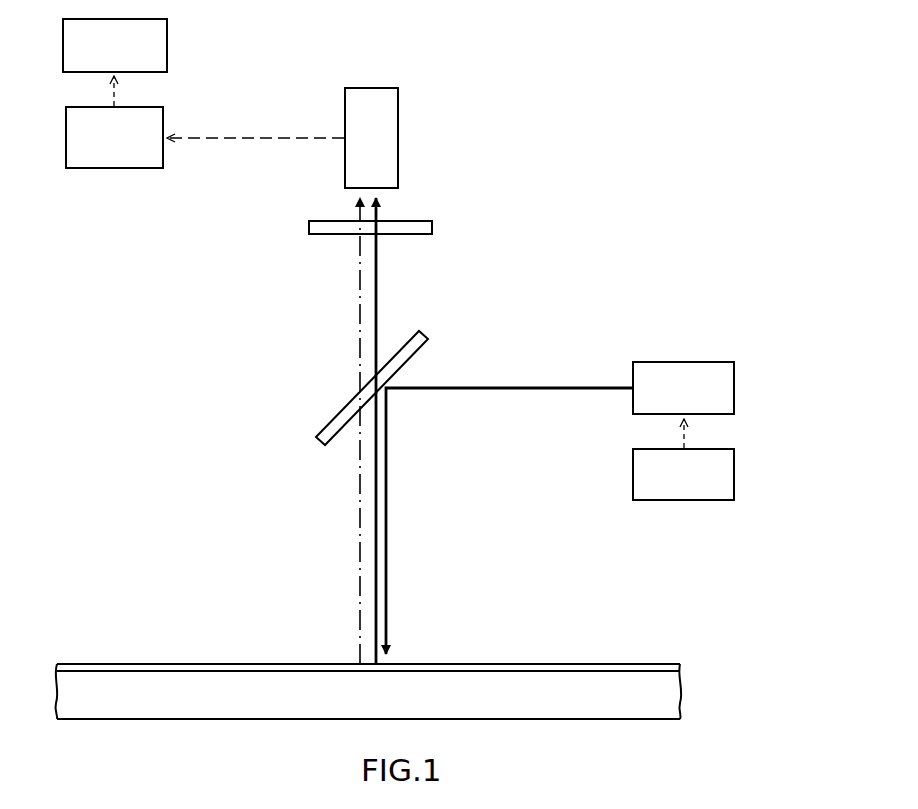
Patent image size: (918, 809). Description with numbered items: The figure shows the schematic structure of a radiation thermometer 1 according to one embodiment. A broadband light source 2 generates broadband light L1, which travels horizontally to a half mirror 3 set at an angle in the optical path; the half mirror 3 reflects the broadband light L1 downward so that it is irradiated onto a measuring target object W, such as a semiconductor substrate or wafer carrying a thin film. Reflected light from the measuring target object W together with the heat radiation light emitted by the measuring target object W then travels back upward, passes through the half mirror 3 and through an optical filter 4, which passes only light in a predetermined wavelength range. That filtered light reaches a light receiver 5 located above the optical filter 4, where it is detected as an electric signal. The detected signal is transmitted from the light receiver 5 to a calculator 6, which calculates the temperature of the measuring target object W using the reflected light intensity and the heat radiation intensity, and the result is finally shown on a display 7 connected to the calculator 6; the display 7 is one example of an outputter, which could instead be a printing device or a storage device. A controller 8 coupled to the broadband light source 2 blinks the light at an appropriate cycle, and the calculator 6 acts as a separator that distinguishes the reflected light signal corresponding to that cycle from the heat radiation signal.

The radiation thermometer 1 is at (690, 174).
The broadband light source 2 is at (683, 362).
The half mirror 3 is at (321, 432).
The optical filter 4 is at (310, 226).
The light receiver 5 is at (394, 140).
The calculator 6 is at (66, 138).
The display 7 is at (62, 50).
The controller 8 is at (732, 473).
The broadband light L1 is at (520, 386).
The measuring target object W is at (682, 700).